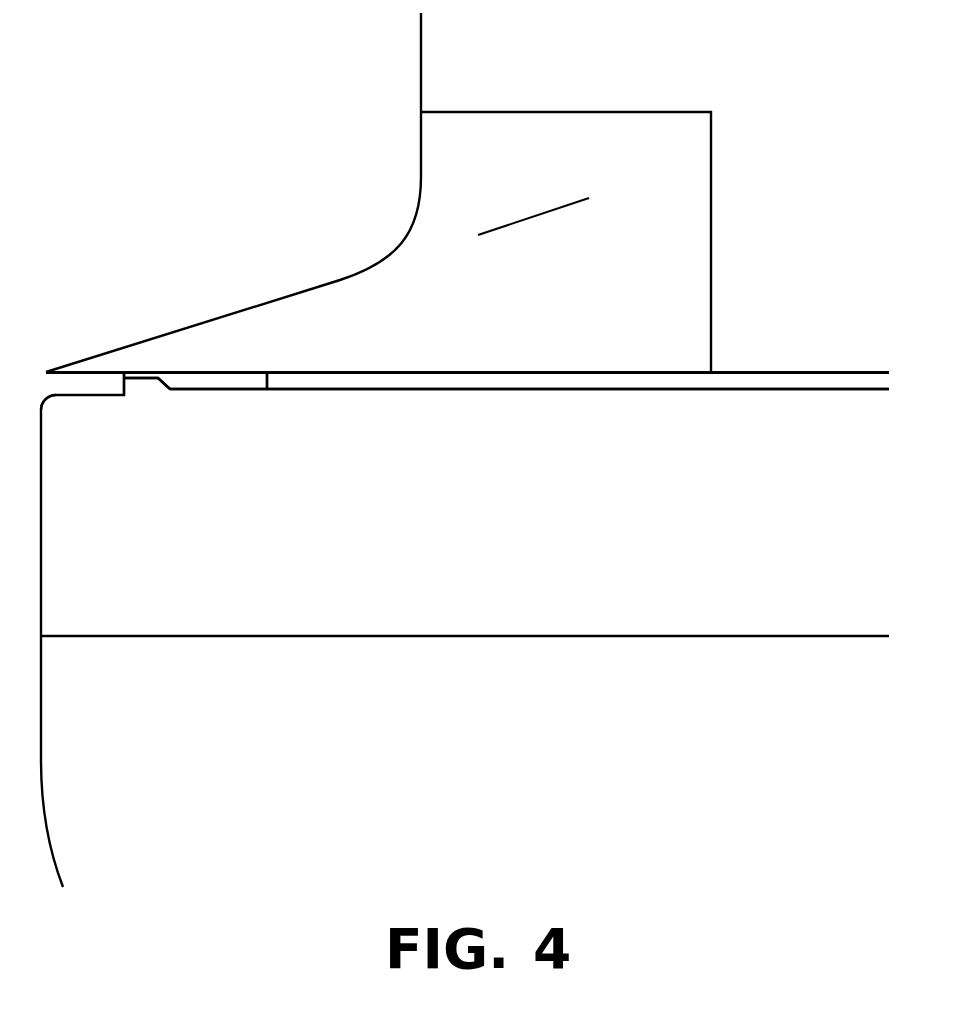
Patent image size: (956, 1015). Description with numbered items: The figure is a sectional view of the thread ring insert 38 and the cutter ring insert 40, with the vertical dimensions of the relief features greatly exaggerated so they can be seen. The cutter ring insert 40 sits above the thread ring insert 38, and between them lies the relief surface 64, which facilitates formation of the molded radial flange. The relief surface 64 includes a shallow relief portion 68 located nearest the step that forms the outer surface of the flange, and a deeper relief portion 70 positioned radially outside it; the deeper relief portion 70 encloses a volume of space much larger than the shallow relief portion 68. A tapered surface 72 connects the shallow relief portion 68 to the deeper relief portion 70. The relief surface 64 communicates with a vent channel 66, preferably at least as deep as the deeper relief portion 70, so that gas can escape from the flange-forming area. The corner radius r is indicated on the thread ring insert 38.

The thread ring insert 38 is at (720, 603).
The cutter ring insert 40 is at (682, 228).
The relief surface 64 is at (224, 429).
The vent channel 66 is at (351, 379).
The shallow relief portion 68 is at (140, 379).
The deeper relief portion 70 is at (243, 391).
The tapered surface 72 is at (162, 381).
The radius r is at (70, 425).